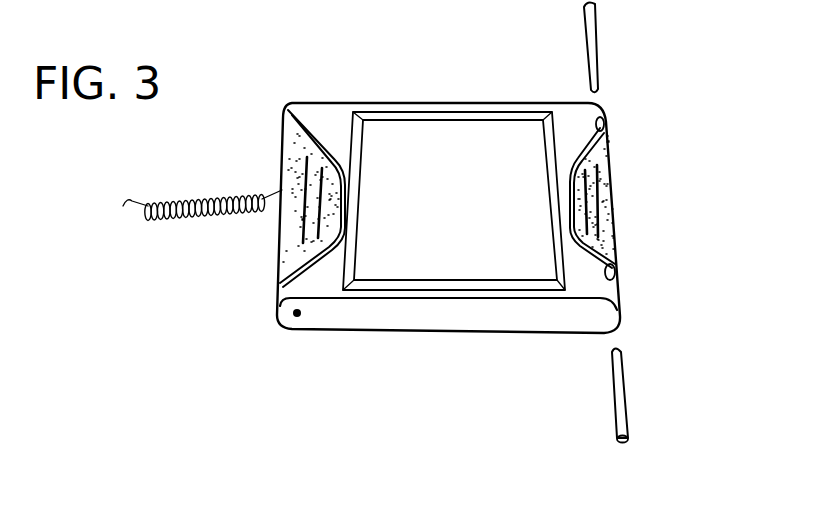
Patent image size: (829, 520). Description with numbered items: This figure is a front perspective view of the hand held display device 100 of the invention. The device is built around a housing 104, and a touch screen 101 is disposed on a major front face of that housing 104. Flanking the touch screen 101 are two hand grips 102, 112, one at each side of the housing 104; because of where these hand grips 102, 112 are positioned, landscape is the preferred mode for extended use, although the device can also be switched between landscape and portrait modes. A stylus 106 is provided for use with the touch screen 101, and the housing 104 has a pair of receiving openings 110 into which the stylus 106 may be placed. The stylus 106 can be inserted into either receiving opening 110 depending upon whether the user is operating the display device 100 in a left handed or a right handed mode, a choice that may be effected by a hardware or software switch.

The display device 100 is at (361, 86).
The touch screen 101 is at (457, 145).
The hand grip 102 is at (285, 250).
The housing 104 is at (300, 96).
The stylus 106 is at (588, 40).
The receiving opening 110 is at (604, 121).
The hand grip 112 is at (612, 250).